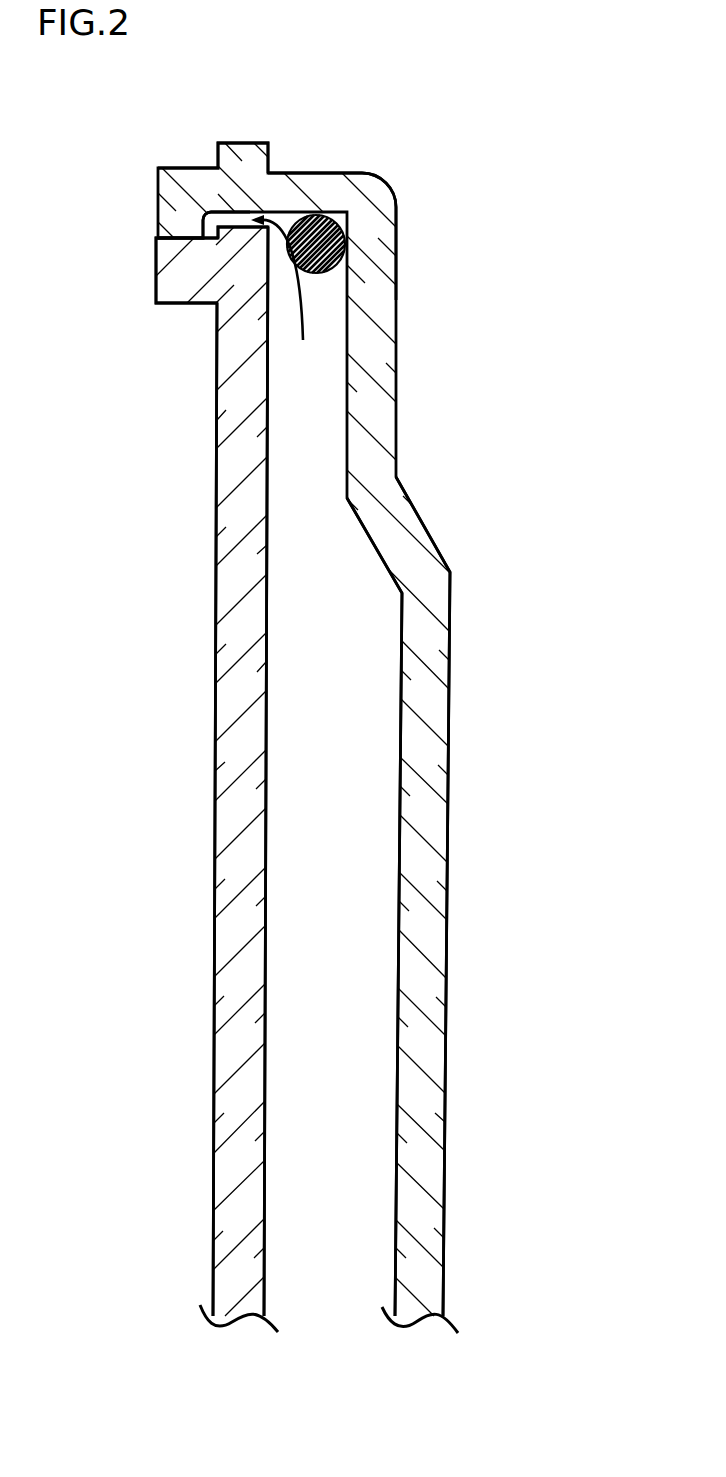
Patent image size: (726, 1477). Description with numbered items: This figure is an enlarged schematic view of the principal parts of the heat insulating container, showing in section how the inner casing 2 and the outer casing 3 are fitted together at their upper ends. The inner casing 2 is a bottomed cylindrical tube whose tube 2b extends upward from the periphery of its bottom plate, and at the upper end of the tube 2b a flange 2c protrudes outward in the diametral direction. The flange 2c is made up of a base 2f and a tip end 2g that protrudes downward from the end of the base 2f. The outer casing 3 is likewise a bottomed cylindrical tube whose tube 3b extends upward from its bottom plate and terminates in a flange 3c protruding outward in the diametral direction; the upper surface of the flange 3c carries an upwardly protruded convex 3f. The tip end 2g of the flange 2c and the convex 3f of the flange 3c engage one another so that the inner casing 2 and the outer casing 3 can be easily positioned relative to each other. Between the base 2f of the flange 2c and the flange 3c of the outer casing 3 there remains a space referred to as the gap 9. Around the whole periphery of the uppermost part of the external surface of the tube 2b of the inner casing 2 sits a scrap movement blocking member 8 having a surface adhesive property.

The inner casing 2 is at (308, 700).
The tube 2b is at (430, 743).
The flange 2c is at (177, 175).
The base 2f is at (318, 185).
The tip end 2g is at (168, 210).
The outer casing 3 is at (165, 708).
The tube 3b is at (237, 693).
The flange 3c is at (167, 265).
The convex 3f is at (237, 222).
The scrap movement blocking member 8 is at (343, 263).
The gap 9 is at (284, 295).